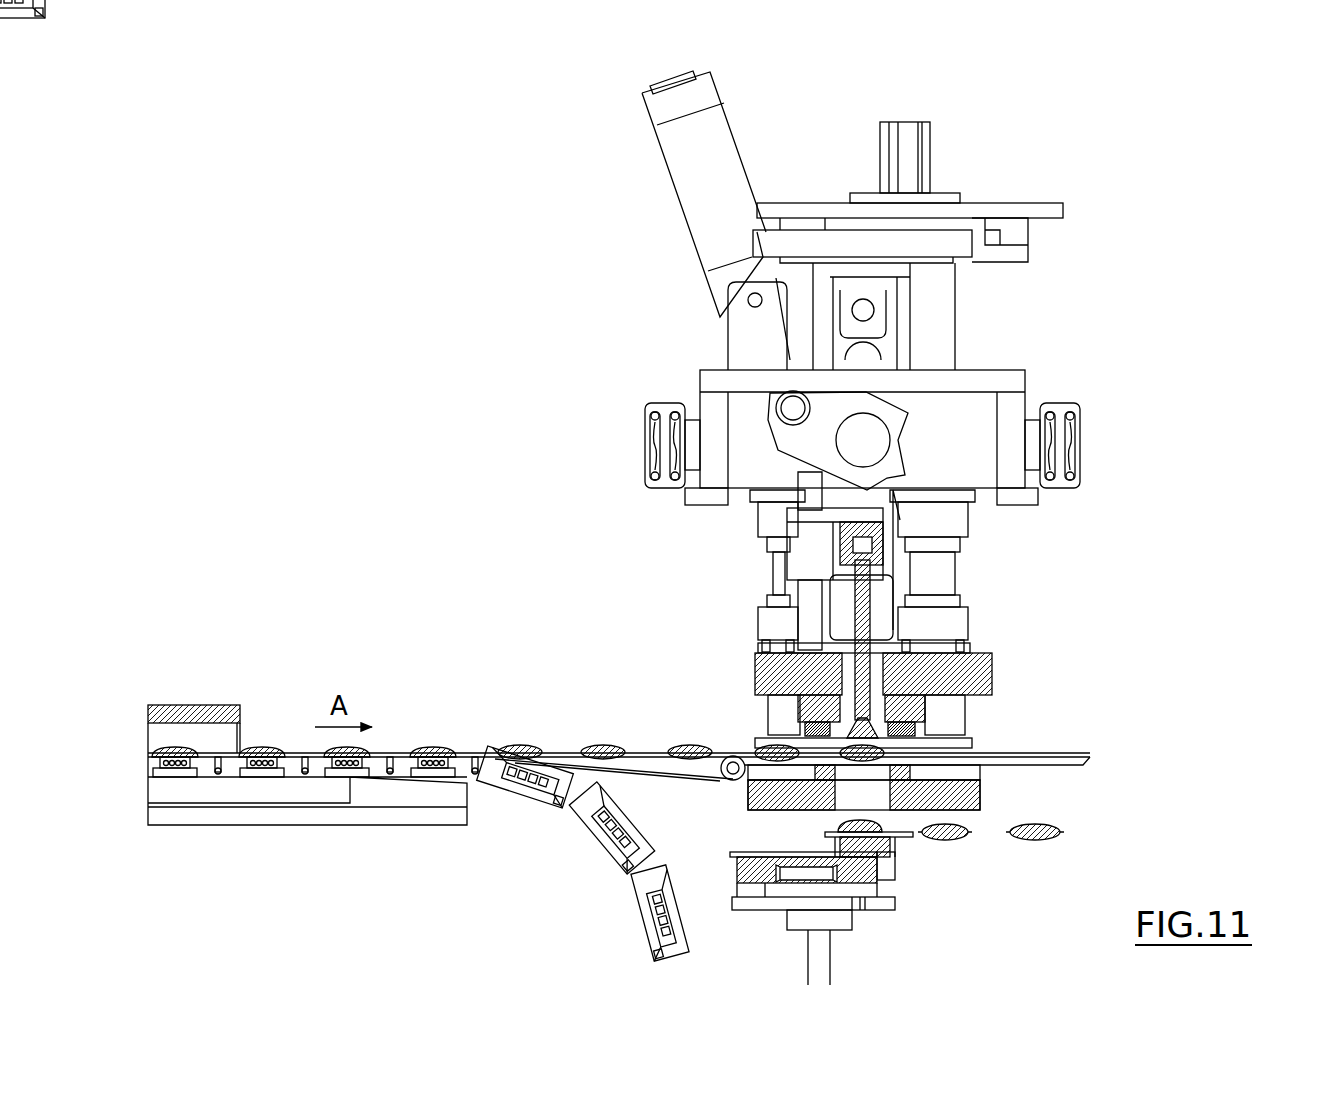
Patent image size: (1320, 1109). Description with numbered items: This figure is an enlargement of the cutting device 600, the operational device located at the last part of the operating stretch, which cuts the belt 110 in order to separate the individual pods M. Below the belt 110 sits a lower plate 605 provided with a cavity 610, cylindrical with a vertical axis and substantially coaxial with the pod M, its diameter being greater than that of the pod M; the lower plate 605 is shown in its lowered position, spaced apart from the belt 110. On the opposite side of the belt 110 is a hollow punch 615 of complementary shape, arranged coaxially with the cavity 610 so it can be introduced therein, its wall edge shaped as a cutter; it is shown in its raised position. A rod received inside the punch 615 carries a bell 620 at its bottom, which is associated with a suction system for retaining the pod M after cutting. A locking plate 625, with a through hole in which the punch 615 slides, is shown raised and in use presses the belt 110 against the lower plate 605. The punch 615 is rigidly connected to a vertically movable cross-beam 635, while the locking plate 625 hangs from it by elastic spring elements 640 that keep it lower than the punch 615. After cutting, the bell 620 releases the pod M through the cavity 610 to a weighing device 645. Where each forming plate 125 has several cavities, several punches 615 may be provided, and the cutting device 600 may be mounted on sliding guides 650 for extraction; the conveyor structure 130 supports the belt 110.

The cutting device 600 is at (1084, 314).
The sliding guides 650 is at (650, 415).
The cross-beam 635 is at (753, 653).
The bell 620 is at (967, 645).
The hollow punch 615 is at (997, 667).
The elastic spring elements 640 is at (930, 722).
The locking plate 625 is at (803, 733).
The cavity 610 is at (930, 778).
The belt 110 is at (300, 753).
The conveyor frame 130 is at (368, 815).
The forming plate 125 is at (587, 810).
The lower plate 605 is at (948, 842).
The pod M is at (1037, 843).
The weighing device 645 is at (855, 885).